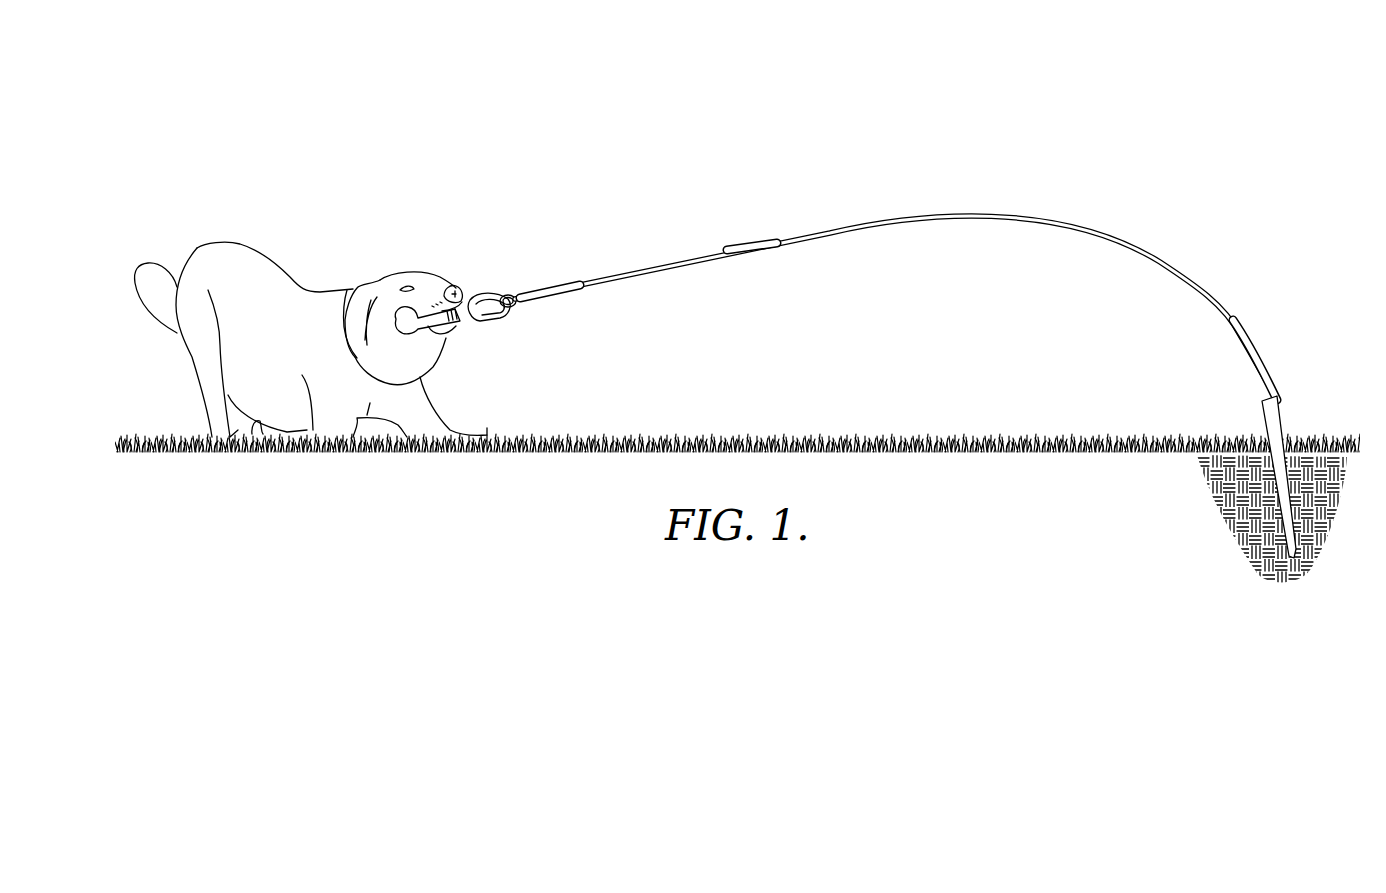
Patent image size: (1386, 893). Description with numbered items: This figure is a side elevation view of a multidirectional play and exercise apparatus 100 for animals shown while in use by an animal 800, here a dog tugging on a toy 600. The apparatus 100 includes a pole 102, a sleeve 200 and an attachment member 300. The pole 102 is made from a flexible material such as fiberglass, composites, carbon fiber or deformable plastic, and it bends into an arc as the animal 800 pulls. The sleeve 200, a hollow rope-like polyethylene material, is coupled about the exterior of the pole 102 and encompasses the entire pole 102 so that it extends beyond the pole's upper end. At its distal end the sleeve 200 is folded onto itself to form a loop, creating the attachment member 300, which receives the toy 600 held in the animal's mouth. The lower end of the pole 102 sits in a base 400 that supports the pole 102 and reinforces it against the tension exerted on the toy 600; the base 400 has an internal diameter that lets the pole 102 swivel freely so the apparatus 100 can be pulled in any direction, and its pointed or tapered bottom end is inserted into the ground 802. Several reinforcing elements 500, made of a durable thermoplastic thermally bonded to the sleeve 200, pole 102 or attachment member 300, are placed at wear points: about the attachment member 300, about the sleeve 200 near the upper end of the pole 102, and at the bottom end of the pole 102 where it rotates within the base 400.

The apparatus 100 is at (1018, 87).
The pole 102 is at (1055, 220).
The sleeve 200 is at (662, 266).
The attachment member 300 is at (517, 297).
The base 400 is at (1280, 418).
The reinforcing element 500 is at (556, 298).
The toy 600 is at (478, 293).
The animal 800 is at (222, 243).
The ground 802 is at (1238, 508).